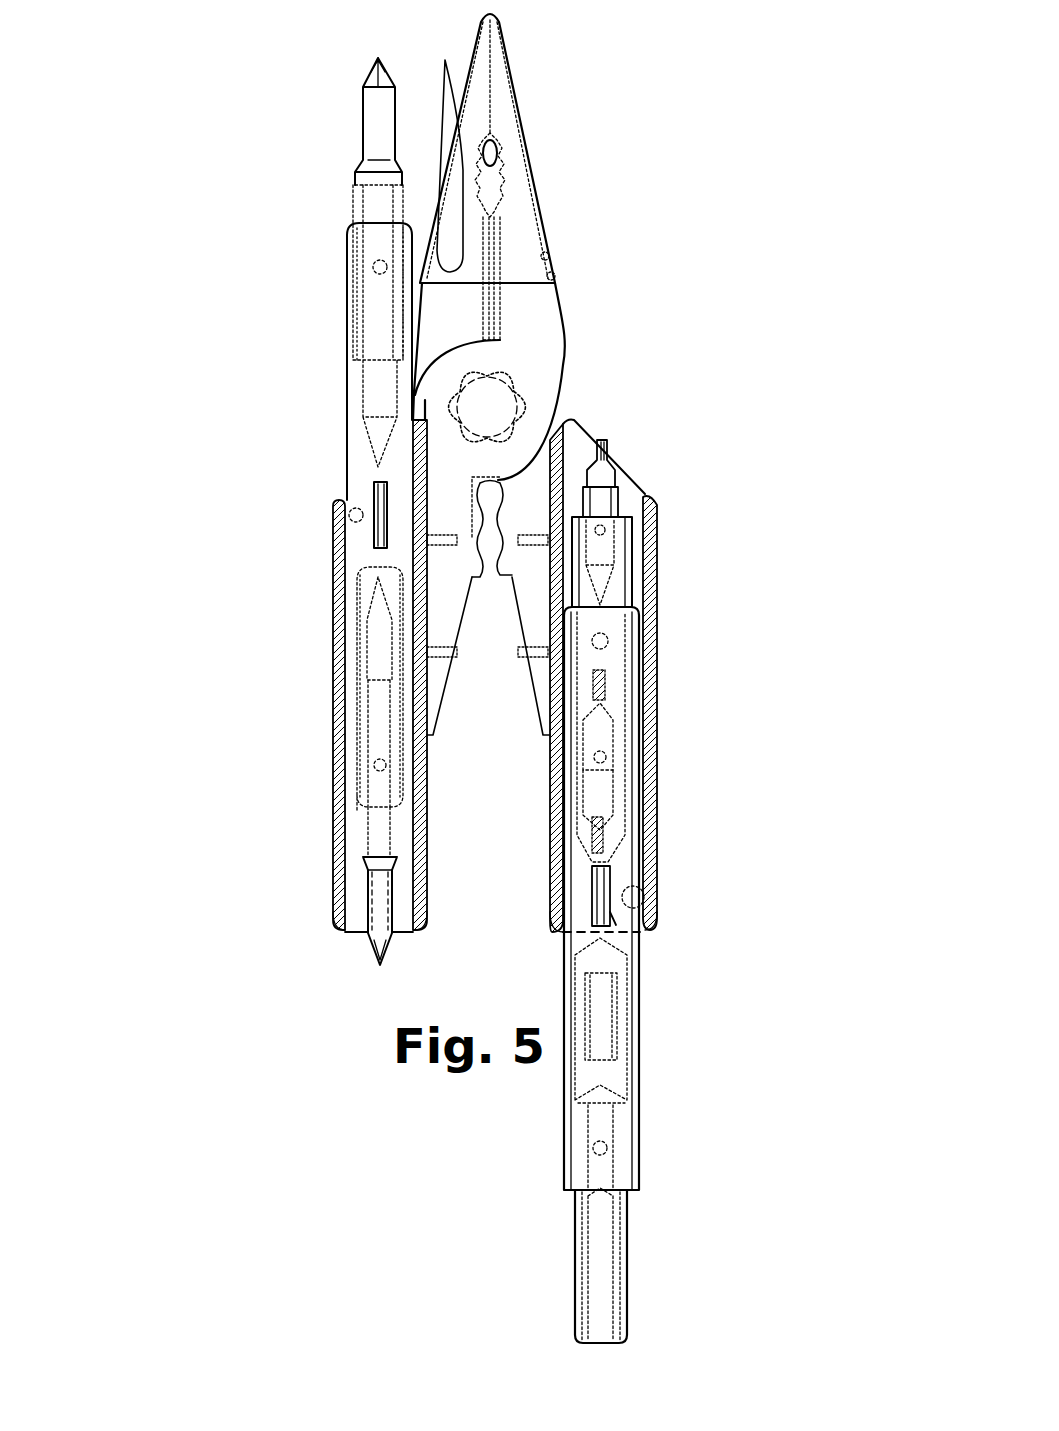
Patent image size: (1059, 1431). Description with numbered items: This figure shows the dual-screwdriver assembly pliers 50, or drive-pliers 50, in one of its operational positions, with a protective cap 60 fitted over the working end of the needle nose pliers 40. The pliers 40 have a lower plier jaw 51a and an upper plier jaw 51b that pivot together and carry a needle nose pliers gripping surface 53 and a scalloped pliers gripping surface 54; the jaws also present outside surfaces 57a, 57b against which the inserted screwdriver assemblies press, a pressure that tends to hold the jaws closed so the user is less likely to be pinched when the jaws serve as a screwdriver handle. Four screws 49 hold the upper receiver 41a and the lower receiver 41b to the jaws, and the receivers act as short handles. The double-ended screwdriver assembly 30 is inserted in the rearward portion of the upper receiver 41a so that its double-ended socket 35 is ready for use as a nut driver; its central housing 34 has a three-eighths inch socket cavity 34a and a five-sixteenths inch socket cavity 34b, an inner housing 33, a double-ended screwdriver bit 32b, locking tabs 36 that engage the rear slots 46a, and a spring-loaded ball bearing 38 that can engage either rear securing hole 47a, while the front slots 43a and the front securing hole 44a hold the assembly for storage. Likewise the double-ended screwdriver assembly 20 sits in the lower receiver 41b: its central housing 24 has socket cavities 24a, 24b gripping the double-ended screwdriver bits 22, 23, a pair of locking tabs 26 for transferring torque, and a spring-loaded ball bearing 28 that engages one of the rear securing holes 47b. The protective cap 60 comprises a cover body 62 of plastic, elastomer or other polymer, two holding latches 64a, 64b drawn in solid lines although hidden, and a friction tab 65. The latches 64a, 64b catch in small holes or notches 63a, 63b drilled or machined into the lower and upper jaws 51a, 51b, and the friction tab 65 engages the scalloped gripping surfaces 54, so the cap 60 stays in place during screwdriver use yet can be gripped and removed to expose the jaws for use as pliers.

The double-ended screwdriver assembly 20 is at (303, 404).
The double-ended screwdriver bit 22 is at (361, 125).
The double-ended screwdriver bit 23 is at (368, 898).
The central housing 24 is at (345, 612).
The 5/16 inch socket cavity 24a is at (350, 267).
The 1/4 inch socket cavity 24b is at (360, 650).
The locking tabs 26 is at (373, 500).
The spring-loaded ball bearing 28 is at (352, 522).
The double-ended screwdriver assembly 30 is at (692, 1063).
The double-ended screwdriver bit 32b is at (620, 505).
The inner housing 33 is at (632, 575).
The central housing 34 is at (564, 983).
The 3/8 inch socket cavity 34a is at (632, 800).
The 5/16 inch socket cavity 34b is at (625, 1040).
The double-ended socket 35 is at (625, 1262).
The locking tabs 36 is at (614, 913).
The spring-loaded ball bearing 38 is at (641, 905).
The needle nose pliers 40 is at (613, 352).
The upper receiver 41a is at (690, 659).
The lower receiver 41b is at (295, 707).
The front slots 43a is at (612, 487).
The front securing hole 44a is at (655, 505).
The rear slots 46a is at (612, 880).
The rear securing holes 47a is at (553, 898).
The rear securing holes 47b is at (340, 890).
The screws 49 is at (440, 657).
The dual-screwdriver assembly pliers 50 is at (300, 341).
The lower plier jaw 51a is at (423, 300).
The upper plier jaw 51b is at (558, 313).
The needle nose pliers gripping surface 53 is at (488, 63).
The scalloped pliers gripping surface 54 is at (503, 165).
The outside surface 57a is at (413, 350).
The outside surface 57b is at (563, 370).
The protective cap 60 is at (552, 75).
The cover body 62 is at (515, 62).
The small hole or notch 63a is at (437, 193).
The small hole or notch 63b is at (548, 255).
The holding latch 64a is at (452, 143).
The holding latch 64b is at (556, 283).
The friction tab 65 is at (500, 150).